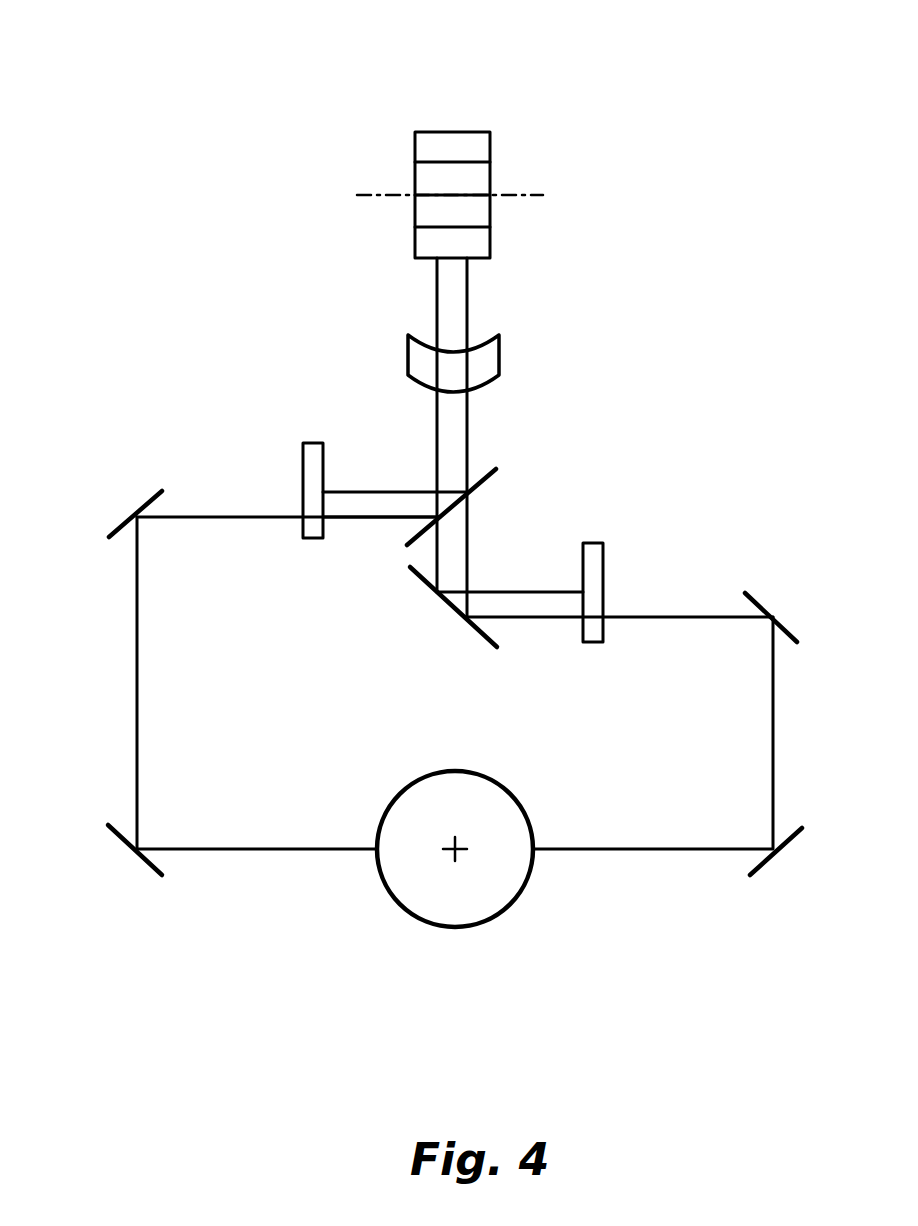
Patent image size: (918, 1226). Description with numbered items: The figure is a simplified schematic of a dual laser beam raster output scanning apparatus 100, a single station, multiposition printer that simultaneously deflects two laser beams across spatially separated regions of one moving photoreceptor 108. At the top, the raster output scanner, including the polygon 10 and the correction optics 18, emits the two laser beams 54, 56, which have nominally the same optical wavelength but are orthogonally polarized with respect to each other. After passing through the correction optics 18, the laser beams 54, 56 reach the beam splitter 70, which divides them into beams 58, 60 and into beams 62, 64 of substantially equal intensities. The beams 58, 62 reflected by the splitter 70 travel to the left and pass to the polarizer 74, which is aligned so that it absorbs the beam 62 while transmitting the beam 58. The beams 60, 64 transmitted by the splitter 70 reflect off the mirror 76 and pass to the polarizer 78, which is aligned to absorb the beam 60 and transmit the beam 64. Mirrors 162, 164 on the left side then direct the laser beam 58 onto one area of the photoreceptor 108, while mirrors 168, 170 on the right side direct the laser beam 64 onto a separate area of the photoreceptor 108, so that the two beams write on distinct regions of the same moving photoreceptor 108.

The apparatus 100 is at (658, 61).
The polygon 10 is at (457, 135).
The laser beam 54 is at (437, 312).
The laser beam 56 is at (468, 310).
The correction optics 18 is at (500, 353).
The polarizer 74 is at (312, 442).
The laser beam 62 is at (388, 491).
The laser beam 58 is at (368, 520).
The beam splitter 70 is at (483, 470).
The mirror 76 is at (487, 636).
The laser beam 60 is at (523, 590).
The laser beam 64 is at (535, 618).
The polarizer 78 is at (593, 543).
The mirror 162 is at (152, 497).
The mirror 164 is at (120, 837).
The mirror 168 is at (757, 598).
The mirror 170 is at (793, 840).
The photoreceptor 108 is at (507, 790).